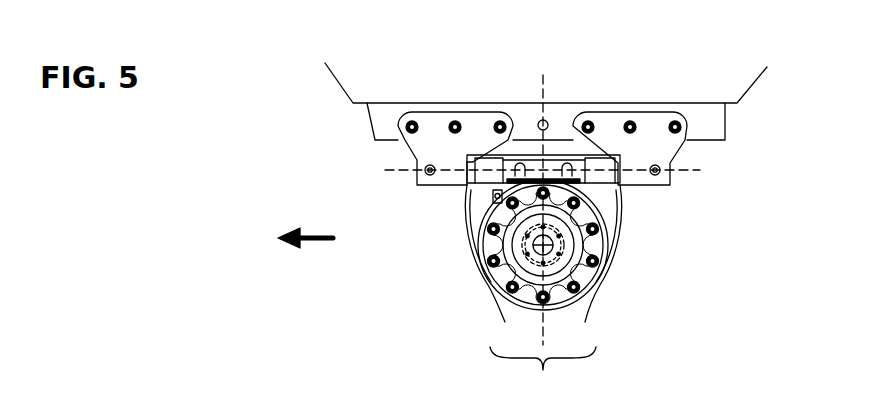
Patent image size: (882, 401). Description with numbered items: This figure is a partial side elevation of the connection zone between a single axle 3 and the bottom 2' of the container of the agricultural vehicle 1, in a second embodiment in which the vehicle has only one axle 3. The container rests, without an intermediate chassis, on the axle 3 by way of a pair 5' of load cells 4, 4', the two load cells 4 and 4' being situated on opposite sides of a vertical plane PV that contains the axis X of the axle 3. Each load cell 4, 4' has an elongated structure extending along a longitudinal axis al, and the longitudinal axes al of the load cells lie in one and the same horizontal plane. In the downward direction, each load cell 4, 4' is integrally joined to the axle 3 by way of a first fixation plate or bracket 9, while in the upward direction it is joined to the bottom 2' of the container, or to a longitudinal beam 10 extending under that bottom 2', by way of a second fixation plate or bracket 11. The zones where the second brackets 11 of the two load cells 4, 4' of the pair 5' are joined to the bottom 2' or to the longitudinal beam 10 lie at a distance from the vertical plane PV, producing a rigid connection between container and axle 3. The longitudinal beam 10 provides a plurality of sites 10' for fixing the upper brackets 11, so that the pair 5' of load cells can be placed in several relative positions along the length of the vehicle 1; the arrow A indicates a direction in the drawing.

The agricultural vehicle 1 is at (420, 268).
The bottom of container 2' is at (575, 86).
The axle 3 is at (592, 266).
The load cell 4 is at (489, 266).
The load cell 4' is at (600, 266).
The pair of load cells 5' is at (543, 374).
The first fixation plate or bracket 9 is at (567, 230).
The longitudinal beam 10 is at (412, 148).
The fixation site 10' is at (577, 86).
The second fixation plate or bracket 11 is at (406, 126).
The direction of travel A is at (321, 240).
The vertical plane PV is at (538, 92).
The axis of axle X is at (543, 245).
The longitudinal axis of load cell al is at (680, 172).